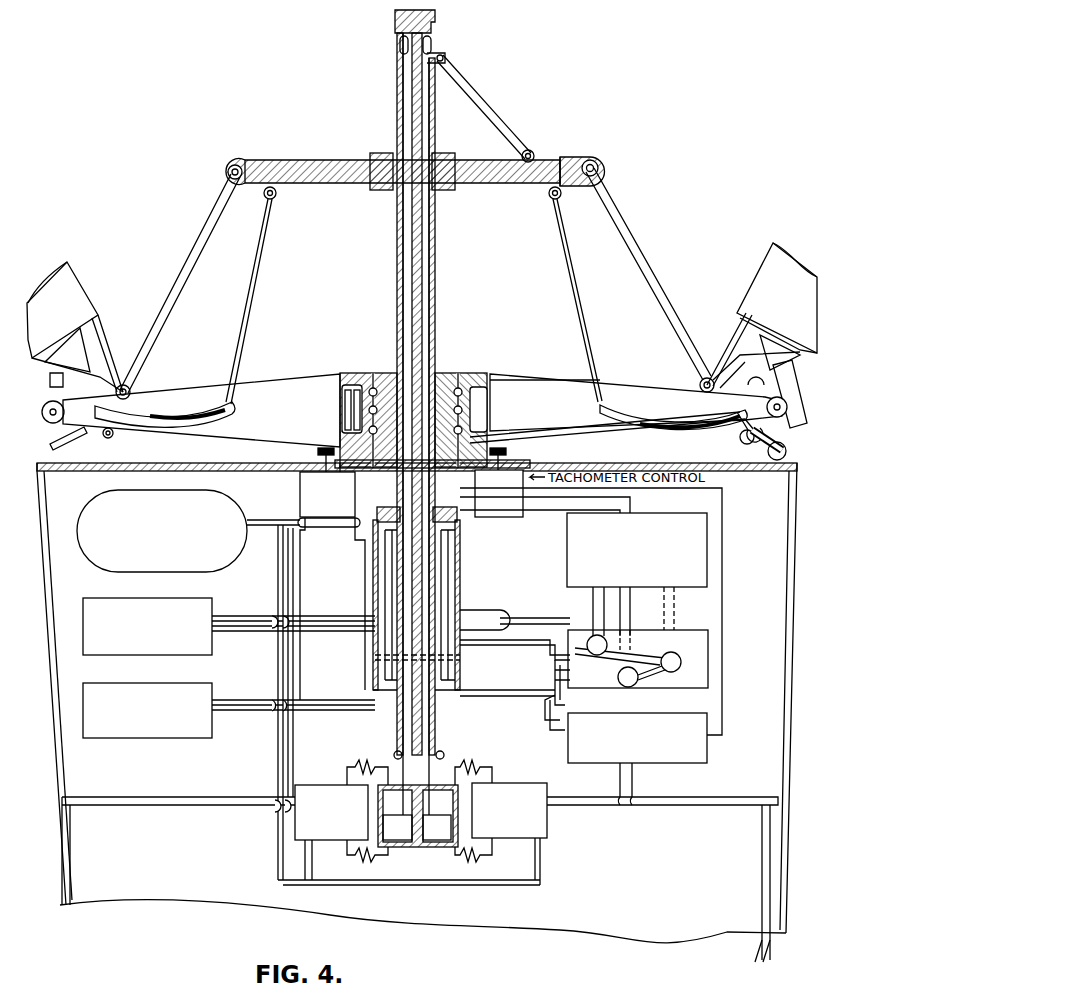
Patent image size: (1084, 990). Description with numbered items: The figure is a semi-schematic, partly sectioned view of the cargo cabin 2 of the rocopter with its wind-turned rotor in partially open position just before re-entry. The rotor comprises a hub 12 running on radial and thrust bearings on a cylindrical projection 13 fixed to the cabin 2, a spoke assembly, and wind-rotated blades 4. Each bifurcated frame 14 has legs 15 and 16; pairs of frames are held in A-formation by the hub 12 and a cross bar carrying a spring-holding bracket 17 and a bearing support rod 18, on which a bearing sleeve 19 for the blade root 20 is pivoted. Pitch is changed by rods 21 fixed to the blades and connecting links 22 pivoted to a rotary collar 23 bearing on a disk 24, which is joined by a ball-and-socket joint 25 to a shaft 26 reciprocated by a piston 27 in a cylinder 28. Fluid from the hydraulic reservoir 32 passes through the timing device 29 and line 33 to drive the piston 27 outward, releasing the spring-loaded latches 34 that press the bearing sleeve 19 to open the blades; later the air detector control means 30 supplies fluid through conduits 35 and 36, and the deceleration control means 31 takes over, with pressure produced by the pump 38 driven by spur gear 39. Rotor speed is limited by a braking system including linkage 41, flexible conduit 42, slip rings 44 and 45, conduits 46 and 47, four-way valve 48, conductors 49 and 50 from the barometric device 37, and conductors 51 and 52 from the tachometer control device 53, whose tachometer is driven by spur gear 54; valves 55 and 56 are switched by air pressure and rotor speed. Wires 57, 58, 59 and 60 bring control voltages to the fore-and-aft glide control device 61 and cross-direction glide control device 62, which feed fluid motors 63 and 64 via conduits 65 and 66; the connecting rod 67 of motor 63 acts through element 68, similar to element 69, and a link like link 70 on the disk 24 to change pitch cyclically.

The cabin 2 is at (785, 515).
The wind-rotated blade 4 is at (75, 268).
The hub 12 is at (345, 373).
The cylindrical projection 13 is at (450, 373).
The bifurcated frame 14 is at (545, 396).
The leg 15 is at (505, 376).
The leg 16 is at (250, 430).
The spring-holding bracket 17 is at (104, 436).
The bearing support rod 18 is at (785, 412).
The bearing sleeve 19 is at (795, 398).
The root 20 is at (780, 362).
The rod 21 is at (85, 350).
The connecting link 22 is at (205, 210).
The rotary collar 23 is at (572, 155).
The disk 24 is at (478, 186).
The ball-and-socket joint 25 is at (452, 152).
The rod or shaft 26 is at (437, 17).
The piston 27 is at (445, 523).
The cylinder 28 is at (447, 691).
The timing device 29 is at (707, 750).
The air detector control means 30 is at (190, 657).
The deceleration control means 31 is at (150, 740).
The hydraulic reservoir 32 is at (150, 573).
The line 33 is at (512, 690).
The spring-loaded latch 34 is at (160, 404).
The conduit 35 is at (228, 616).
The conduit 36 is at (242, 630).
The barometric device 37 is at (567, 548).
The pump 38 is at (300, 486).
The spur gear 39 is at (316, 452).
The linkage 41 is at (740, 437).
The flexible fluid conduit 42 is at (793, 451).
The slip ring 44 is at (342, 430).
The slip ring 45 is at (357, 432).
The conduit 46 is at (505, 615).
The conduit 47 is at (522, 640).
The four-way valve 48 is at (597, 645).
The electrical conductor 49 is at (593, 600).
The electrical conductor 50 is at (604, 617).
The electrical conductor 51 is at (538, 515).
The electrical conductor 52 is at (632, 500).
The tachometer control device 53 is at (499, 493).
The spur gear 54 is at (508, 452).
The four-way valve 55 is at (671, 662).
The valve 56 is at (641, 676).
The wire 57 is at (85, 797).
The wire 58 is at (75, 805).
The wire 59 is at (756, 787).
The wire 60 is at (735, 805).
The fore-and-aft glide control device 61 is at (310, 783).
The cross-direction glide control device 62 is at (530, 780).
The fluid motor 63 is at (397, 827).
The motor 64 is at (437, 827).
The conduit 65 is at (358, 764).
The conduit 66 is at (400, 854).
The connecting rod 67 is at (408, 746).
The element 68 is at (398, 45).
The element 69 is at (436, 46).
The link 70 is at (478, 88).